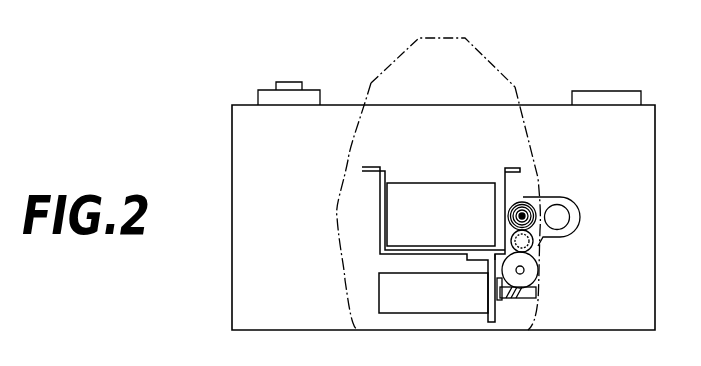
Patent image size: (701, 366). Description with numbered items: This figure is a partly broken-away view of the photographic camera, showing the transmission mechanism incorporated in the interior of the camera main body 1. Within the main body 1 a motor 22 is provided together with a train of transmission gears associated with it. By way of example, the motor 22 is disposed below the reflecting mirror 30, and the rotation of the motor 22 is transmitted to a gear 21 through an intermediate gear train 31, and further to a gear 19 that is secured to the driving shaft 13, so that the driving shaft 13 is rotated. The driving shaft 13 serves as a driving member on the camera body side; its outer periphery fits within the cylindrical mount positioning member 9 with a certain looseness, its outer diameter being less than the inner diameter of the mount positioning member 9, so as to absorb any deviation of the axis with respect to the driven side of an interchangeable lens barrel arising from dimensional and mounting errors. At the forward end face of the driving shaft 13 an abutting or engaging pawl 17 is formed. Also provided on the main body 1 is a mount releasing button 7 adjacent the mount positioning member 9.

The main body 1 is at (382, 63).
The mount releasing button 7 is at (560, 218).
The cylindrical mount positioning member 9 is at (533, 205).
The driving shaft 13 is at (529, 227).
The abutting or engaging pawl 17 is at (528, 205).
The gear 19 is at (505, 207).
The gear 21 is at (526, 245).
The motor 22 is at (390, 294).
The reflecting mirror 30 is at (404, 195).
The intermediate gear train 31 is at (530, 273).